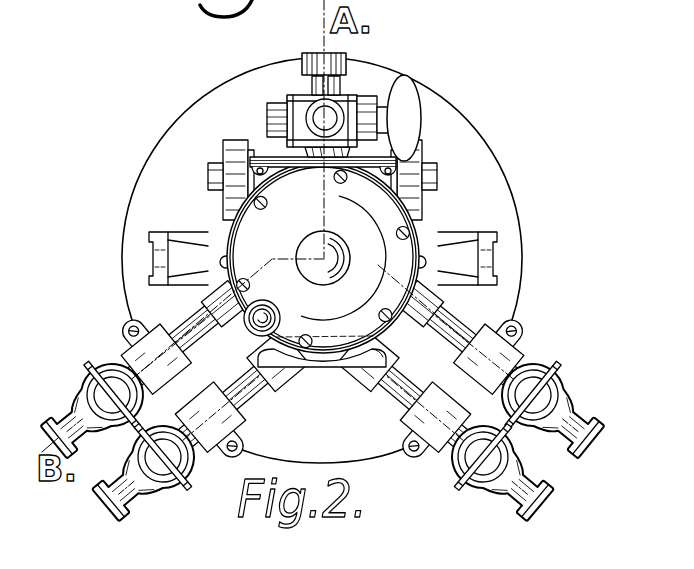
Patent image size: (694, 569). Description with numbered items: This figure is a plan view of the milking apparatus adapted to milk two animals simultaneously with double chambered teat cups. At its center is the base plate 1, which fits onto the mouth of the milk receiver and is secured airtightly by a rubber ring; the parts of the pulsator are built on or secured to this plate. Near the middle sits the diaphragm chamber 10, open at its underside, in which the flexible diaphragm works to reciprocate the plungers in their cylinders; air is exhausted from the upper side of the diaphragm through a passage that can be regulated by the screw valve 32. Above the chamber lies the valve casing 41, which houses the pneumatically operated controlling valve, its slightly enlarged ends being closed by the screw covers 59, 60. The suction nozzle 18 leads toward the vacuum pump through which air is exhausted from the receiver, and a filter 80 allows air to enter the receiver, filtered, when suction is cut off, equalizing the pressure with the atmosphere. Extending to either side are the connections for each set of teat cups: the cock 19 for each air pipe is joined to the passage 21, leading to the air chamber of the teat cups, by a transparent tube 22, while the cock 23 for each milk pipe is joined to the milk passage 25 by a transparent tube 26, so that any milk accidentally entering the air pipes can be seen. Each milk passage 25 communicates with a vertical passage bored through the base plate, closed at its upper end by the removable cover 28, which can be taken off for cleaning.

The base plate 1 is at (190, 119).
The chamber 10 is at (237, 231).
The suction nozzle 18 is at (312, 113).
The cock 19 is at (107, 370).
The passage 21 is at (220, 282).
The transparent tube 22 is at (188, 323).
The cock 23 is at (125, 474).
The milk passage 25 is at (357, 388).
The transparent tube 26 is at (242, 383).
The removable cover 28 is at (376, 353).
The screw valve 32 is at (266, 314).
The valve casing 41 is at (278, 162).
The screw cover 59 is at (224, 152).
The screw cover 60 is at (423, 163).
The filter 80 is at (312, 53).